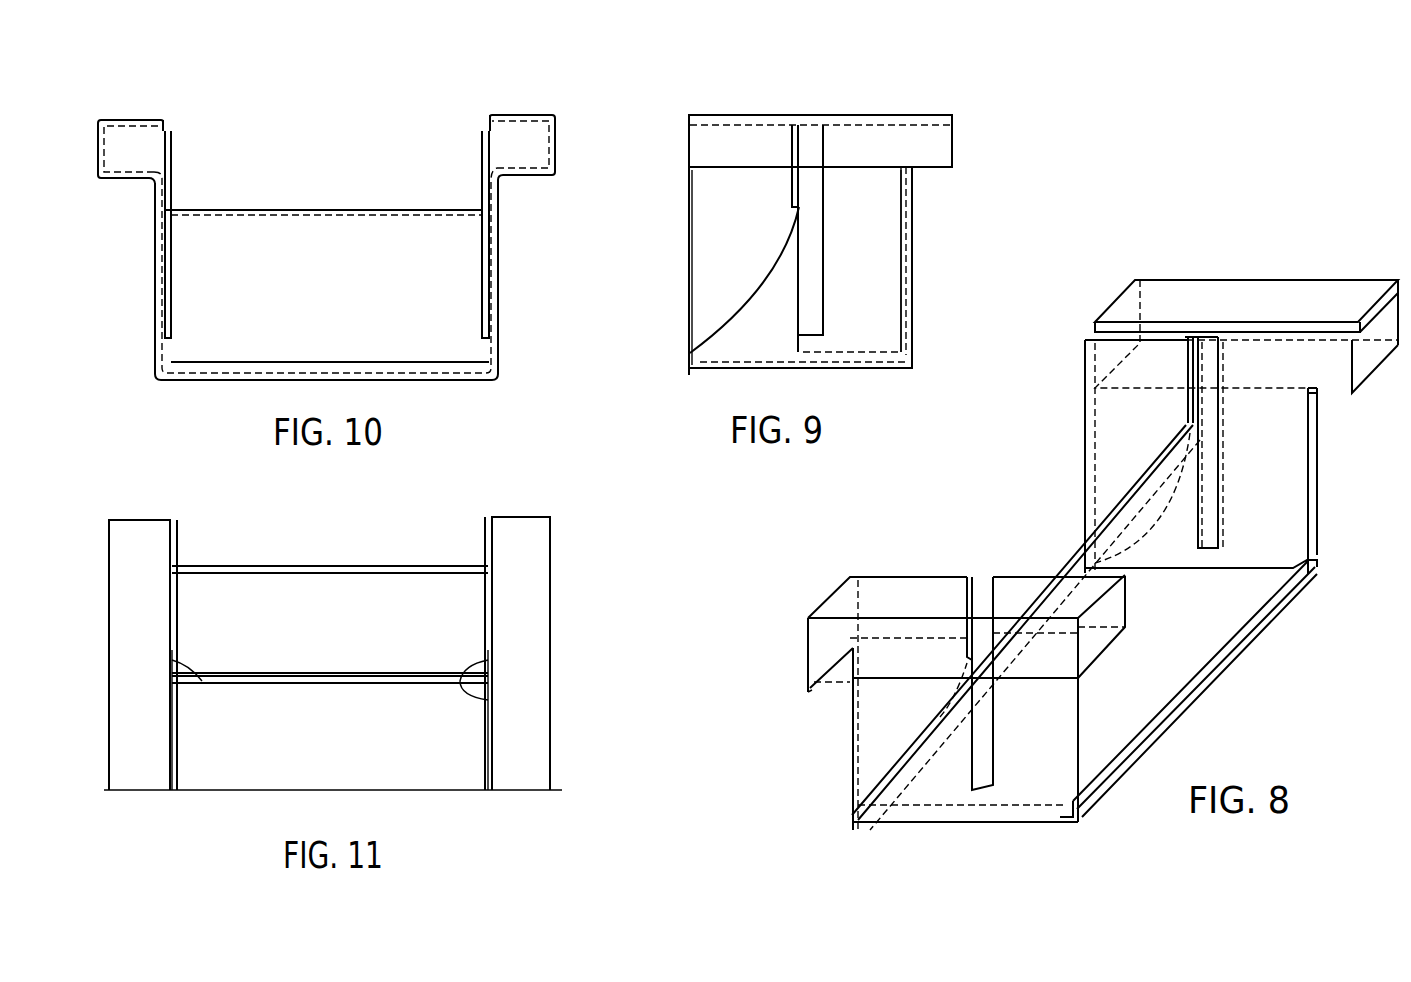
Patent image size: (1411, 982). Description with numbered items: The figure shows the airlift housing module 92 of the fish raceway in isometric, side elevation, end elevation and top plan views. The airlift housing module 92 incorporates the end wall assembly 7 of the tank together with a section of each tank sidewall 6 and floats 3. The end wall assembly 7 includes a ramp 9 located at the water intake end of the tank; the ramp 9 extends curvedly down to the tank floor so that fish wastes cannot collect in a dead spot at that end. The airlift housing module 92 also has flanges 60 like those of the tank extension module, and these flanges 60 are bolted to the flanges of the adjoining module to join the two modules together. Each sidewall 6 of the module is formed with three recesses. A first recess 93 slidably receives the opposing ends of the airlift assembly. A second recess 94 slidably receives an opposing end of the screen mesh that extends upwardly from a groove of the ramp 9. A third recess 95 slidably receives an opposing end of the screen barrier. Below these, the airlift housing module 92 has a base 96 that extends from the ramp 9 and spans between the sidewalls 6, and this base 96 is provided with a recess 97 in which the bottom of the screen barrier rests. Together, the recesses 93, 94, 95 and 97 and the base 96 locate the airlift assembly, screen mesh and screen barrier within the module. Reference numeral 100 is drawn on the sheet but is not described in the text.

In FIG. 10, the floats 3 is at (134, 135).
In FIG. 9, the floats 3 is at (923, 130).
In FIG. 11, the floats 3 is at (154, 643).
In FIG. 8, the floats 3 is at (1183, 306).
In FIG. 10, the sidewall 6 is at (171, 172).
In FIG. 9, the sidewall 6 is at (748, 218).
In FIG. 11, the sidewall 6 is at (178, 544).
In FIG. 8, the sidewall 6 is at (1110, 409).
In FIG. 10, the end wall assembly 7 is at (430, 339).
In FIG. 9, the end wall assembly 7 is at (738, 310).
In FIG. 8, the end wall assembly 7 is at (1070, 531).
In FIG. 10, the ramp 9 is at (346, 301).
In FIG. 9, the ramp 9 is at (763, 283).
In FIG. 11, the ramp 9 is at (369, 762).
In FIG. 8, the ramp 9 is at (1072, 561).
In FIG. 10, the flanges 60 is at (185, 382).
In FIG. 9, the flanges 60 is at (688, 130).
In FIG. 11, the flanges 60 is at (108, 792).
In FIG. 8, the flanges 60 is at (851, 688).
In FIG. 10, the airlift housing module 92 is at (537, 388).
In FIG. 9, the airlift housing module 92 is at (679, 387).
In FIG. 11, the airlift housing module 92 is at (552, 495).
In FIG. 8, the airlift housing module 92 is at (1244, 665).
In FIG. 10, the first recess 93 is at (171, 312).
In FIG. 9, the first recess 93 is at (815, 148).
In FIG. 11, the first recess 93 is at (463, 672).
In FIG. 8, the first recess 93 is at (1202, 338).
In FIG. 10, the second recess 94 is at (482, 182).
In FIG. 9, the second recess 94 is at (795, 155).
In FIG. 11, the second recess 94 is at (492, 677).
In FIG. 8, the second recess 94 is at (1183, 340).
In FIG. 9, the third recess 95 is at (908, 155).
In FIG. 11, the third recess 95 is at (172, 572).
In FIG. 8, the third recess 95 is at (1310, 412).
In FIG. 8, the base 96 is at (1188, 688).
In FIG. 8, the recess 97 is at (1148, 727).
In FIG. 10, the cover plate 100 is at (164, 128).
In FIG. 11, the cover plate 100 is at (172, 602).
In FIG. 8, the cover plate 100 is at (1275, 328).